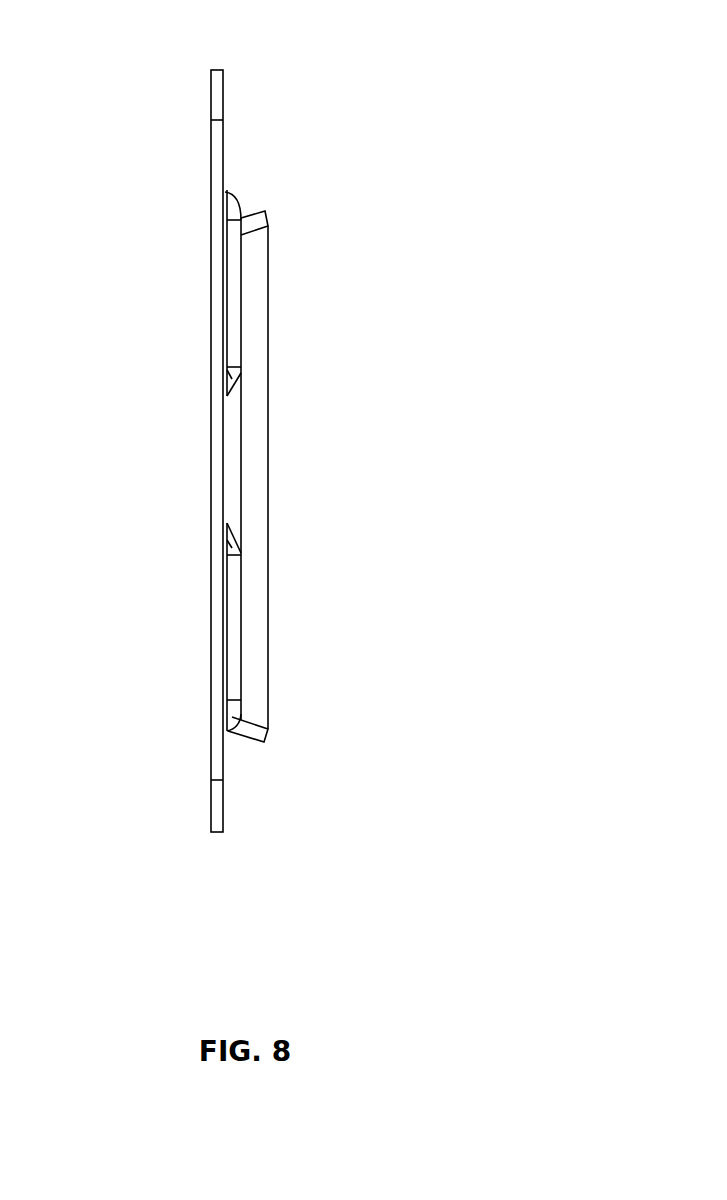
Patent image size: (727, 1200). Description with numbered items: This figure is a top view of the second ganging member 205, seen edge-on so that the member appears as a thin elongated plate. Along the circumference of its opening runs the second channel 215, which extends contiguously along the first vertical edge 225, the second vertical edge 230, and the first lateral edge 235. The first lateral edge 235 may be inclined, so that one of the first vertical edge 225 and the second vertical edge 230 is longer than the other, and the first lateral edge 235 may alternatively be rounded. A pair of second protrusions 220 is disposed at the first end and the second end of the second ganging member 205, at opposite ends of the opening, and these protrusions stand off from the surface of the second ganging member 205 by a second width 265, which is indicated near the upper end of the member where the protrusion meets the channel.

The second ganging member 205 is at (224, 82).
The second channel 215 is at (237, 222).
The pair of second protrusions 220 is at (242, 313).
The first vertical edge 225 is at (264, 742).
The second vertical edge 230 is at (248, 218).
The first lateral edge 235 is at (269, 440).
The second width 265 is at (233, 196).